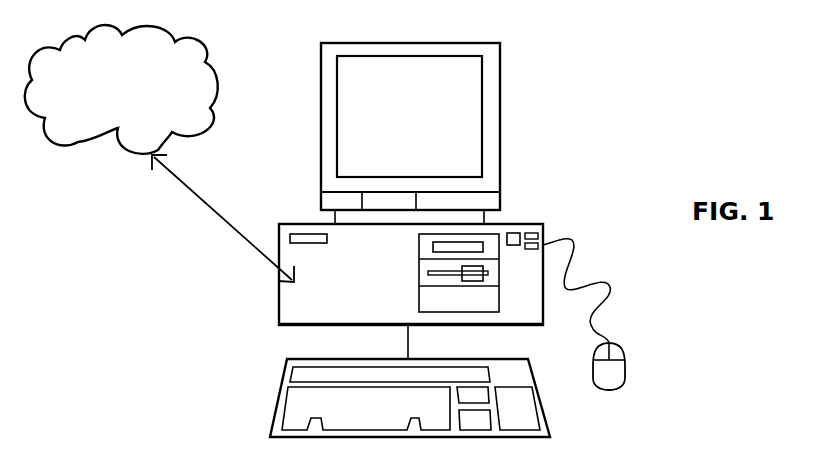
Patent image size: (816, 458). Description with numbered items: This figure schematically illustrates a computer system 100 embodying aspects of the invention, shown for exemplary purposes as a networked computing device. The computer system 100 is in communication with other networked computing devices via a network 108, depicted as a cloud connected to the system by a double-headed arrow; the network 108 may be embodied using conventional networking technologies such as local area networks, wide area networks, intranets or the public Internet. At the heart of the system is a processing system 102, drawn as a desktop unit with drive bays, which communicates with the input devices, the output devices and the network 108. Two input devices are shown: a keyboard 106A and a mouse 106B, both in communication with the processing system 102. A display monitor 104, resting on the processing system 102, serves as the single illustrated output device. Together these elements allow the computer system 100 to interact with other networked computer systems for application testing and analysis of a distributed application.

The computer system 100 is at (634, 60).
The processing system 102 is at (290, 325).
The input devices 104 is at (500, 78).
The input device 106A is at (552, 415).
The input device 106B is at (625, 355).
The network 108 is at (70, 146).